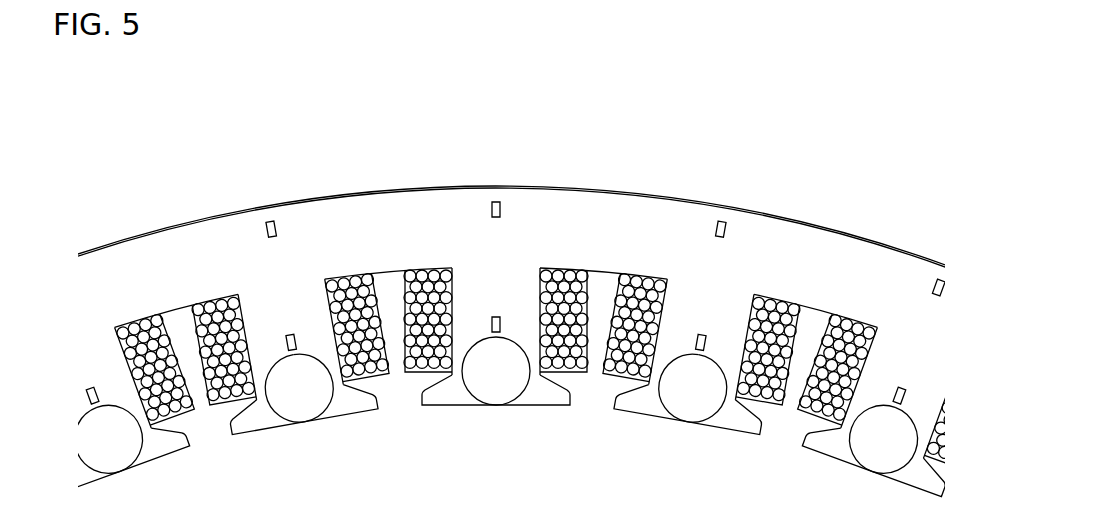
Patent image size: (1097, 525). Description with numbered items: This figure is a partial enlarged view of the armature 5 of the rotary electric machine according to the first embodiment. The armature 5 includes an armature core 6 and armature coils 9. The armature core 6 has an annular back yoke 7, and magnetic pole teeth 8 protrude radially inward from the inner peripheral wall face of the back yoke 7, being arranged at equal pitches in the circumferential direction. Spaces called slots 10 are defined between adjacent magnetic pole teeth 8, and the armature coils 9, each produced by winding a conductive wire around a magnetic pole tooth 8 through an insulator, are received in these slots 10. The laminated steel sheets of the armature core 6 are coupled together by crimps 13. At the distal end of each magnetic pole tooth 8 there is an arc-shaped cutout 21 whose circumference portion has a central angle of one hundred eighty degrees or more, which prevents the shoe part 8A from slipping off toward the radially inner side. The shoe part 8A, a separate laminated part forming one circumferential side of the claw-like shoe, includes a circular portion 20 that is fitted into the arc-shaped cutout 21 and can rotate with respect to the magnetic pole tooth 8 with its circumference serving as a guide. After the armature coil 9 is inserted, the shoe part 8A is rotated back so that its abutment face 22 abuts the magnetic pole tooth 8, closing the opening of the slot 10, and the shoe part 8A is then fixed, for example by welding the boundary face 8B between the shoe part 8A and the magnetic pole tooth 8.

The armature 5 is at (835, 215).
The armature core 6 is at (745, 209).
The back yoke 7 is at (577, 212).
The magnetic pole tooth 8 is at (495, 436).
The shoe part 8A is at (713, 412).
The boundary face 8B is at (675, 413).
The armature coil 9 is at (430, 352).
The slot 10 is at (592, 393).
The crimp 13 is at (487, 315).
The circular portion 20 is at (496, 410).
The arc-shaped cutout 21 is at (470, 391).
The abutment face 22 is at (540, 378).